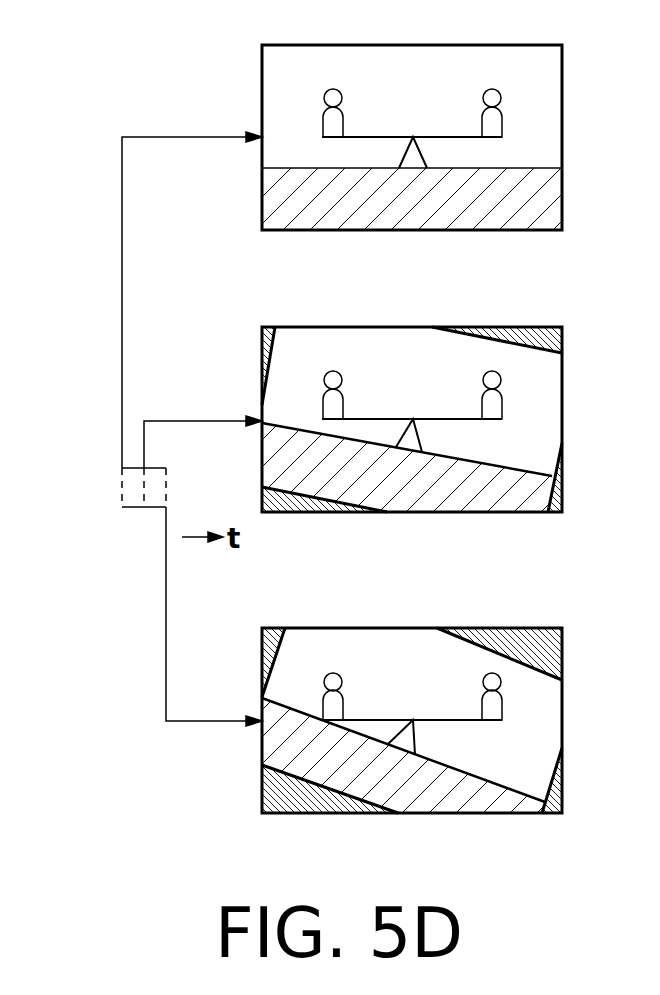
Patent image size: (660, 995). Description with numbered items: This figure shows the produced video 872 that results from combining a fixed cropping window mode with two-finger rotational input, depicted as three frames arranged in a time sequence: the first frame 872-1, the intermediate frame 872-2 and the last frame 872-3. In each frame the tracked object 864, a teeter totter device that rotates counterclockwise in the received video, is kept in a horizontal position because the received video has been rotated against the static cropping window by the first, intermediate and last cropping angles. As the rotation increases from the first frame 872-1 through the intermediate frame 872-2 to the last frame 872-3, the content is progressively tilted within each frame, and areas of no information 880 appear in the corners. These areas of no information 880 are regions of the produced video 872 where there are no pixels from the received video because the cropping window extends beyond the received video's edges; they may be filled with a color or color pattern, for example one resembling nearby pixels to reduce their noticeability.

The object 864 is at (442, 137).
The produced video 872 is at (133, 507).
The first frame of the produced video 872-1 is at (562, 109).
The intermediate frame of the produced video 872-2 is at (562, 400).
The last frame of the produced video 872-3 is at (562, 707).
The areas of no information 880 is at (262, 338).